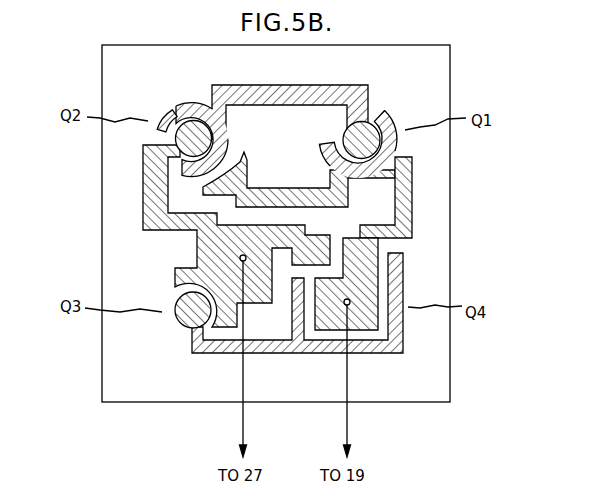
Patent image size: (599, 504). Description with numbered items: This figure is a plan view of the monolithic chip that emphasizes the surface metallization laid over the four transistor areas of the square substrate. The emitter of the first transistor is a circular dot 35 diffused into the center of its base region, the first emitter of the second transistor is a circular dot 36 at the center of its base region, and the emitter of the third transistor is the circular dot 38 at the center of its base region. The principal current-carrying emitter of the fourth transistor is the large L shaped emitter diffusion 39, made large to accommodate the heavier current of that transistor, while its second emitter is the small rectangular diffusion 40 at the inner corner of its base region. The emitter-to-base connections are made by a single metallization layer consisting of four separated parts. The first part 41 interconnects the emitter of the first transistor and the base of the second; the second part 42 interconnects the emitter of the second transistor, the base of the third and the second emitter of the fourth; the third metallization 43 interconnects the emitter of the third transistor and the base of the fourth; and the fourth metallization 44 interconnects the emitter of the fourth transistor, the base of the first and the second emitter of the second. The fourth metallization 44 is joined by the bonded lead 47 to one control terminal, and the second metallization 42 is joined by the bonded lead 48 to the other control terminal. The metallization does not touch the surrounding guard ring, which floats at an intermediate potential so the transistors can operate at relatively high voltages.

The circular dot 35 is at (375, 127).
The circular dot 36 is at (184, 123).
The circular dot 38 is at (185, 323).
The L shaped emitter diffusion 39 is at (351, 302).
The small rectangular diffusion 40 is at (299, 194).
The first part of metallization 41 is at (281, 85).
The second part of metallization 42 is at (193, 236).
The third metallization 43 is at (297, 323).
The fourth metallization 44 is at (423, 197).
The bonded lead 47 is at (348, 306).
The bonded lead 48 is at (195, 351).